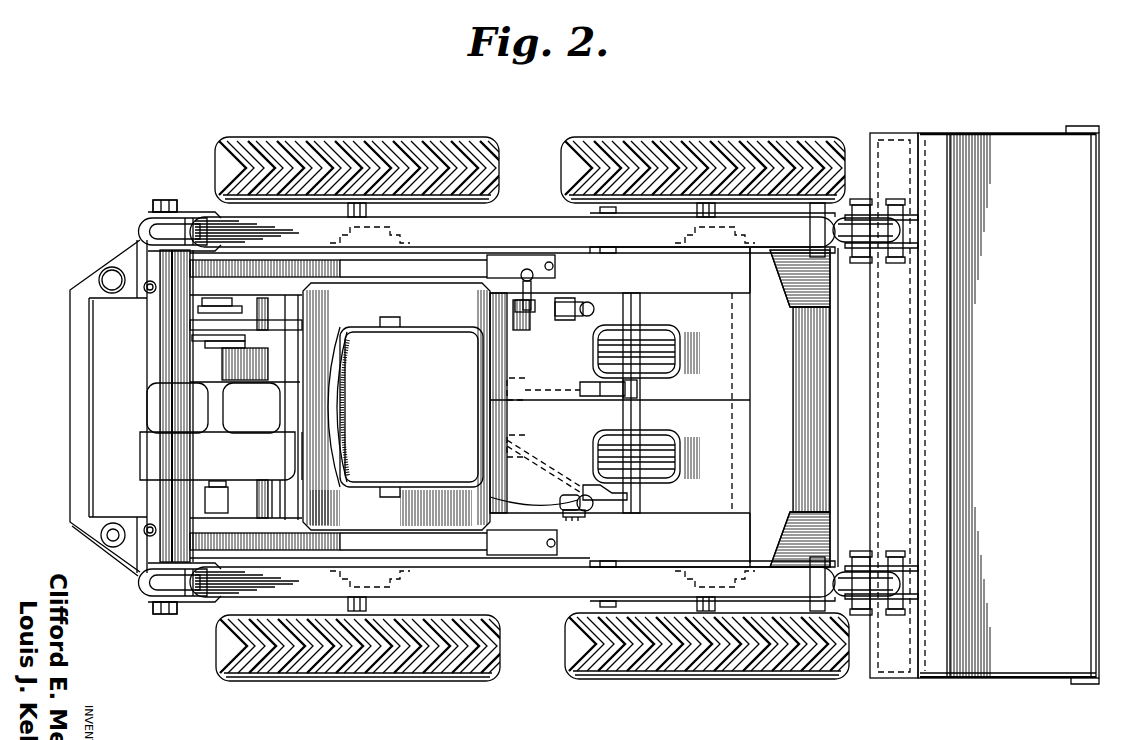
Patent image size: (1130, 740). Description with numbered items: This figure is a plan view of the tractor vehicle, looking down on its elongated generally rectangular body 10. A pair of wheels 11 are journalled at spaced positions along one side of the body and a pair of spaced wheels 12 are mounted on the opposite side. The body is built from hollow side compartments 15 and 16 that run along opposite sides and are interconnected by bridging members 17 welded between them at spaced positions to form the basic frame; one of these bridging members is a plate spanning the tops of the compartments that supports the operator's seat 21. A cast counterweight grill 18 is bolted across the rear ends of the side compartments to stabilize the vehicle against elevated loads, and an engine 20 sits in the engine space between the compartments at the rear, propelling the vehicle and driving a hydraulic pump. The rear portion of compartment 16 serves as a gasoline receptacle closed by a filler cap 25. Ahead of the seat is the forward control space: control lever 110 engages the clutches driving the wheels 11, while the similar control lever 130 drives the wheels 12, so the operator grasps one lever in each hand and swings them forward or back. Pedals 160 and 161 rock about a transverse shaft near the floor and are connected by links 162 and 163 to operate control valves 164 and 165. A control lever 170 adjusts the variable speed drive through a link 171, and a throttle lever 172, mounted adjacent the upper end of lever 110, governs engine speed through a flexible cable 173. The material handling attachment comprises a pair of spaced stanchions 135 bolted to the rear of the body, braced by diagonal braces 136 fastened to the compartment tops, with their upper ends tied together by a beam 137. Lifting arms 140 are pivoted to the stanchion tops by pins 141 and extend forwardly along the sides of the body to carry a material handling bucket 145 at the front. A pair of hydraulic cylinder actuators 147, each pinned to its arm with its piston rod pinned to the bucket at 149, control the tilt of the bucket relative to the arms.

The body 10 is at (60, 292).
The wheels 11 is at (567, 670).
The wheels 12 is at (566, 138).
The side compartment 15 is at (742, 545).
The side compartment 16 is at (724, 286).
The bridging members 17 is at (298, 480).
The counterweight grill 18 is at (70, 346).
The engine 20 is at (132, 442).
The seat 21 is at (417, 344).
The filler cap 25 is at (102, 274).
The control lever 110 is at (561, 497).
The control lever 130 is at (588, 307).
The stanchions 135 is at (150, 232).
The diagonal braces 136 is at (323, 273).
The beam 137 is at (168, 339).
The lifting arms 140 is at (522, 217).
The pins 141 is at (158, 199).
The material handling bucket 145 is at (1022, 128).
The hydraulic cylinder actuators 147 is at (876, 224).
The piston rod pin connection 149 is at (896, 405).
The pedal 160 is at (678, 346).
The pedal 161 is at (680, 459).
The link 162 is at (593, 382).
The link 163 is at (606, 500).
The control valve 164 is at (502, 376).
The control valve 165 is at (506, 448).
The control lever 170 is at (536, 290).
The link 171 is at (504, 346).
The throttle lever 172 is at (570, 517).
The flexible cable 173 is at (492, 503).